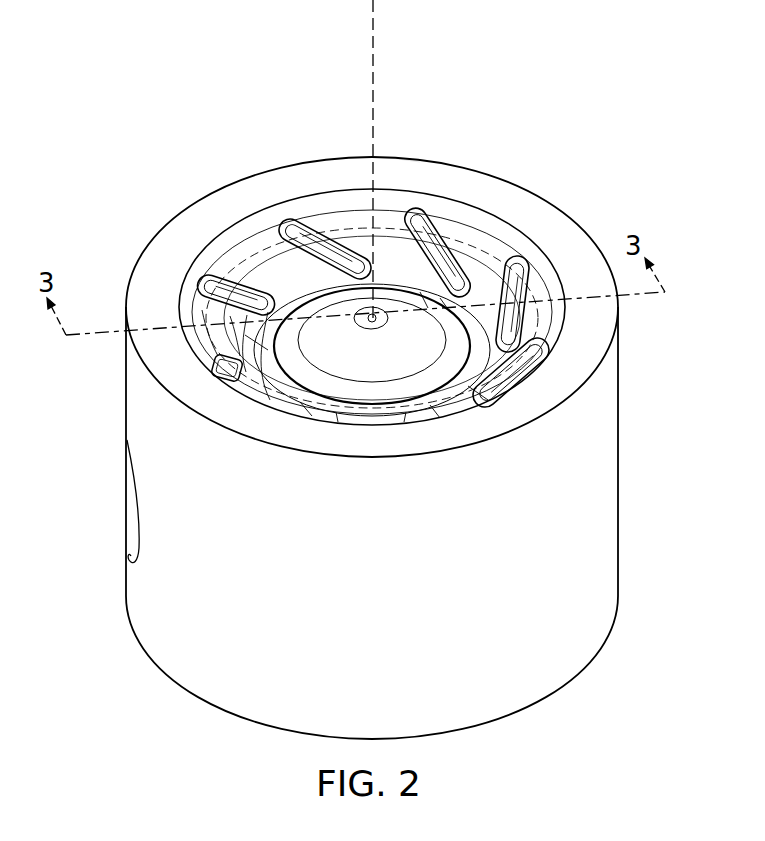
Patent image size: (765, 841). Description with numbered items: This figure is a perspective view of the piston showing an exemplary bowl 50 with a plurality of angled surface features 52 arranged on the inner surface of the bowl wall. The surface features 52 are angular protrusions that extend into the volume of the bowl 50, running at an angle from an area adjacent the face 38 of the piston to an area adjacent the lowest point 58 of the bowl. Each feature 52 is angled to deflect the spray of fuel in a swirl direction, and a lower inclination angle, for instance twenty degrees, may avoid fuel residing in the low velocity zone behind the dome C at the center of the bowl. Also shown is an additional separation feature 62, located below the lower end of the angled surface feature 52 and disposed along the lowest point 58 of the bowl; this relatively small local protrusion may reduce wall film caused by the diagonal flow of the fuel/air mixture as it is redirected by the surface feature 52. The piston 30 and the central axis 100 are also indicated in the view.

The drum 30 is at (108, 270).
The central axis 100 is at (373, 57).
The face 38 is at (405, 184).
The dome C is at (376, 314).
The bowl 50 is at (344, 200).
The angled surface features 52 is at (427, 233).
The lowest point of the bowl 58 is at (268, 300).
The additional separation feature 62 is at (282, 322).